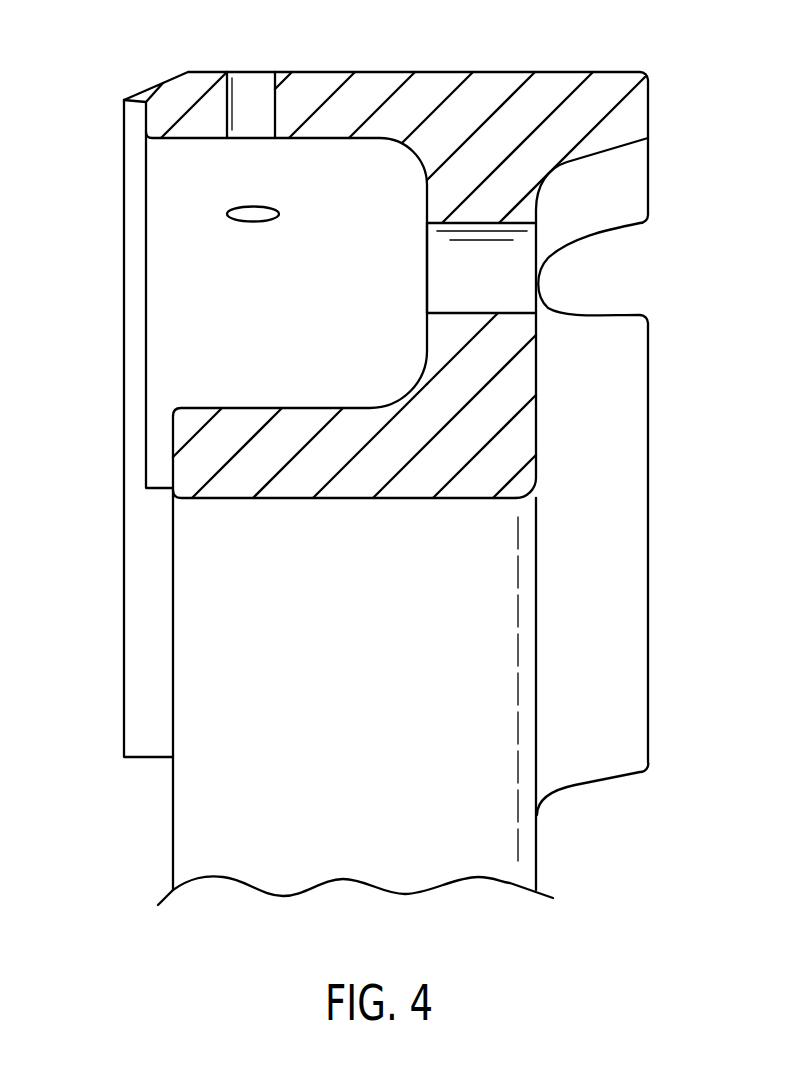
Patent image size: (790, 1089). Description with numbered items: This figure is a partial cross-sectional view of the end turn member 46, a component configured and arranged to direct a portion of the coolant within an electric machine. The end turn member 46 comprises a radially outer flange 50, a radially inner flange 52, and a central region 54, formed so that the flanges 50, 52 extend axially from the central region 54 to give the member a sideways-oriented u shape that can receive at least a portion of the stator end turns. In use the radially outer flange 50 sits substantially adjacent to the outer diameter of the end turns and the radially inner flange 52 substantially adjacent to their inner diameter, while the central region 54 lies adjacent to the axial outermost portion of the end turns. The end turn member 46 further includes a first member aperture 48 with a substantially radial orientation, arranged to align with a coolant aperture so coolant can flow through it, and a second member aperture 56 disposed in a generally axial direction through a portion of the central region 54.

The end turn member 46 is at (558, 82).
The first member aperture 48 is at (248, 88).
The radially outer flange 50 is at (308, 88).
The radially inner flange 52 is at (229, 483).
The central region 54 is at (522, 378).
The second member aperture 56 is at (498, 282).